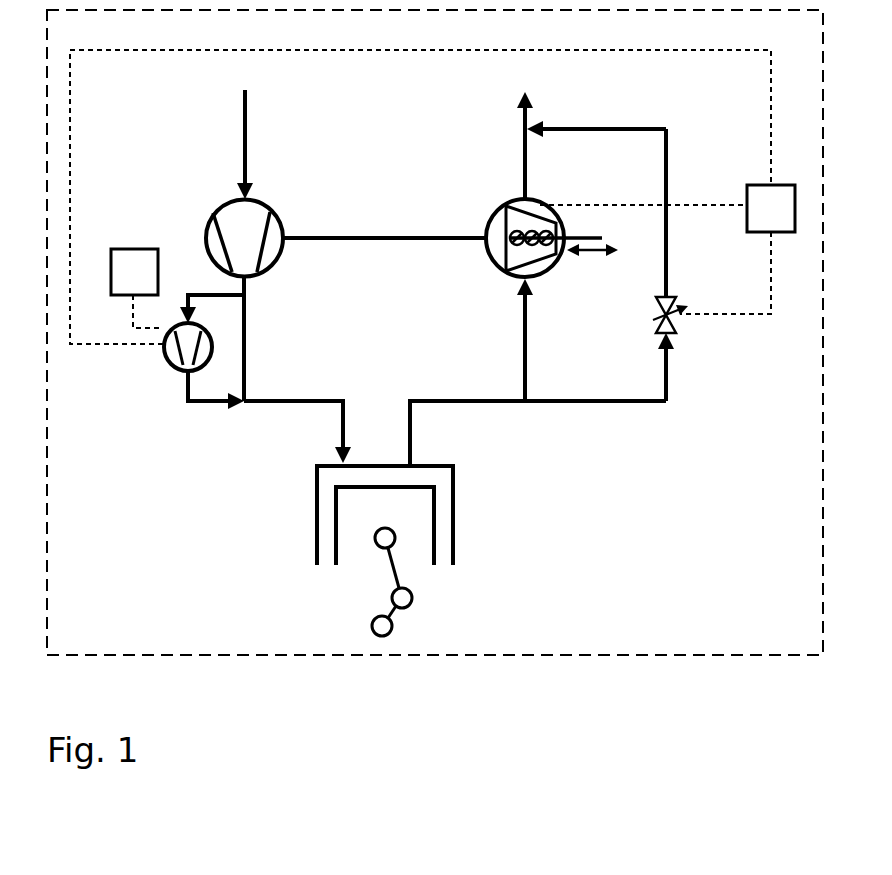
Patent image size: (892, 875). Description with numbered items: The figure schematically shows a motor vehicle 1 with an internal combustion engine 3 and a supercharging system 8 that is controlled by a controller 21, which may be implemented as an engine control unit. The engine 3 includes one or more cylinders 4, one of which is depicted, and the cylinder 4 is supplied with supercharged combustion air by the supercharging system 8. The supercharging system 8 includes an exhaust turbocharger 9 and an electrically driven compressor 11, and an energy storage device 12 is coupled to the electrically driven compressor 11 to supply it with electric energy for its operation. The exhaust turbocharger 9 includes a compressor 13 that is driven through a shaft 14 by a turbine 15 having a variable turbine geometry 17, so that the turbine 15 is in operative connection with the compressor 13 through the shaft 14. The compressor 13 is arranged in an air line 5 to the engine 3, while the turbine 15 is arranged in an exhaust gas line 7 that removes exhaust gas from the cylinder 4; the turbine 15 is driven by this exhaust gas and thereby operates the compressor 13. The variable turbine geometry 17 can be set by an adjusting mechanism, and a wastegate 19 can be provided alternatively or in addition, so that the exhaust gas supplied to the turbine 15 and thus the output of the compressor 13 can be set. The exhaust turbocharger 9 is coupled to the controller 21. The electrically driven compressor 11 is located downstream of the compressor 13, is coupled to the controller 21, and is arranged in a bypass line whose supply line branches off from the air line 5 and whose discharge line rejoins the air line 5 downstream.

The motor vehicle 1 is at (137, 655).
The internal combustion engine 3 is at (270, 557).
The cylinder 4 is at (453, 545).
The air line 5 is at (242, 136).
The exhaust gas line 7 is at (522, 155).
The supercharging system 8 is at (344, 177).
The exhaust turbocharger 9 is at (407, 222).
The electrically driven compressor 11 is at (170, 356).
The energy storage device 12 is at (137, 288).
The compressor 13 is at (205, 236).
The shaft 14 is at (322, 240).
The turbine 15 is at (494, 262).
The variable turbine geometry 17 is at (608, 226).
The wastegate 19 is at (673, 323).
The controller 21 is at (667, 249).